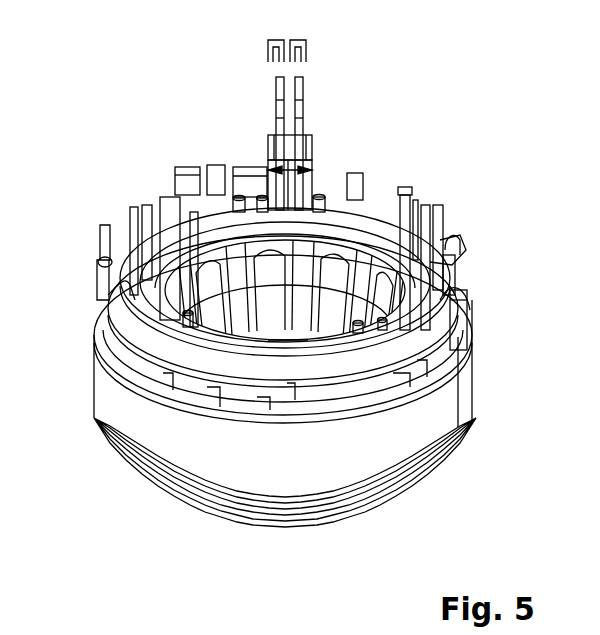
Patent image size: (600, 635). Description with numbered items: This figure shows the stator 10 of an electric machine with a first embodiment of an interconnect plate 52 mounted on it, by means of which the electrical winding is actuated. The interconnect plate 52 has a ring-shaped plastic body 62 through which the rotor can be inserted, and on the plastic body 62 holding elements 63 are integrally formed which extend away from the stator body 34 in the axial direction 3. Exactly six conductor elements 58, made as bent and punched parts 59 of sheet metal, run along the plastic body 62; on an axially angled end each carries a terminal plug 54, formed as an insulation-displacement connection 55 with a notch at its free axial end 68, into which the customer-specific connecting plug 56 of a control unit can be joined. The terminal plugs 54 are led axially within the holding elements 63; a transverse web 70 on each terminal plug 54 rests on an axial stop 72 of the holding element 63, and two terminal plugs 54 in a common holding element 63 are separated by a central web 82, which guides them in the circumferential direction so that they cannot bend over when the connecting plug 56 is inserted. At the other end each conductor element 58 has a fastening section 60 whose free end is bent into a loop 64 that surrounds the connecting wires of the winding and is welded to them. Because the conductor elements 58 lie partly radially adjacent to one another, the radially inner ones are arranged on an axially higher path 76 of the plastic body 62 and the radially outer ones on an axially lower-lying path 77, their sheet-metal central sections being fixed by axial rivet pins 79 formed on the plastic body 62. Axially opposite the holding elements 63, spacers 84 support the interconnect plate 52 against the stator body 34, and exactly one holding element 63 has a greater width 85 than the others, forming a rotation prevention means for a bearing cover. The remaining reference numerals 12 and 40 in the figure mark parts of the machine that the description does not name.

The axial direction 3 is at (285, 548).
The stator 10 is at (108, 510).
The stator 12 is at (490, 108).
The stator body 34 is at (457, 432).
The lamination stack 40 is at (420, 503).
The interconnect plate 52 is at (263, 197).
The terminal plug 54 is at (342, 129).
The insulation-displacement connection 55 is at (303, 90).
The connecting plug 56 is at (270, 44).
The conductor element 58 is at (124, 244).
The bent and punched part 59 is at (150, 205).
The fastening section 60 is at (195, 175).
The plastic body 62 is at (305, 245).
The holding element 63 is at (100, 305).
The loop 64 is at (100, 433).
The free axial end 68 is at (277, 90).
The transverse web 70 is at (460, 300).
The axial stop 72 is at (272, 166).
The axially higher path 76 is at (270, 352).
The axially lower-lying path 77 is at (283, 372).
The rivet pin 79 is at (320, 198).
The central web 82 is at (103, 287).
The spacer 84 is at (447, 350).
The greater width 85 is at (330, 215).